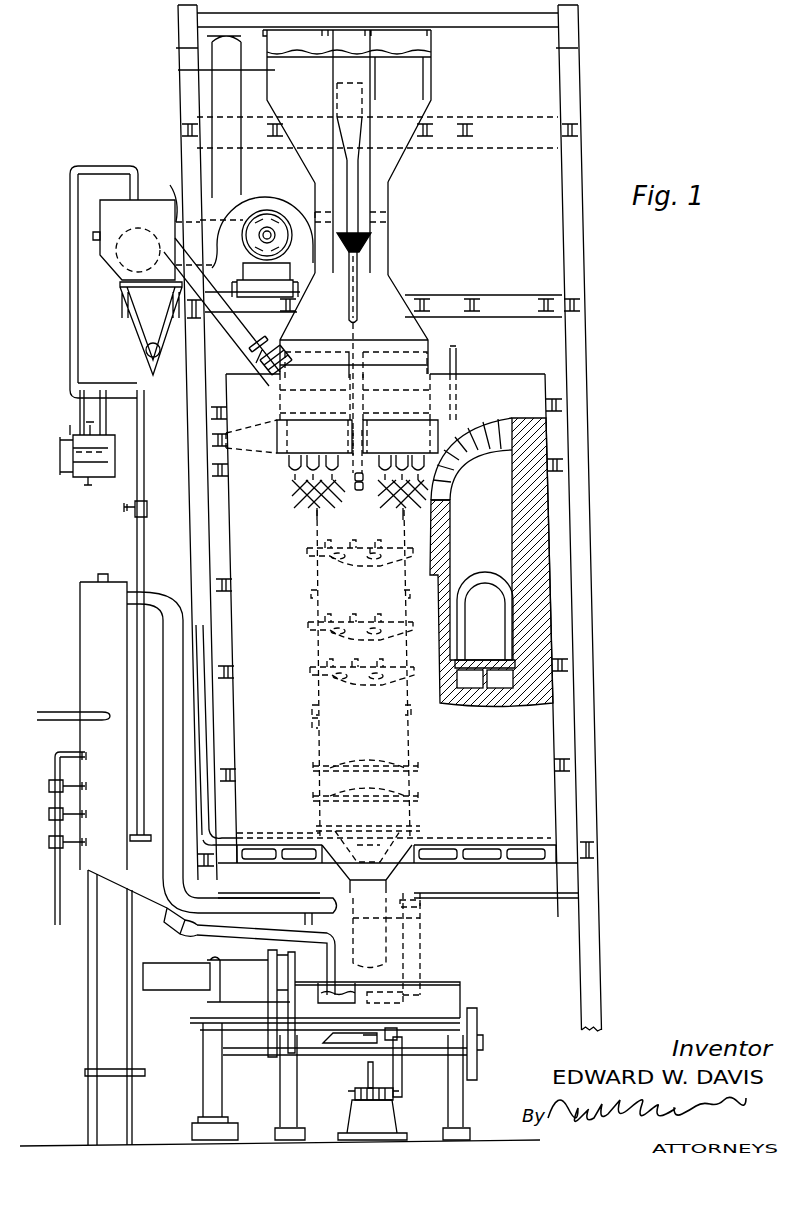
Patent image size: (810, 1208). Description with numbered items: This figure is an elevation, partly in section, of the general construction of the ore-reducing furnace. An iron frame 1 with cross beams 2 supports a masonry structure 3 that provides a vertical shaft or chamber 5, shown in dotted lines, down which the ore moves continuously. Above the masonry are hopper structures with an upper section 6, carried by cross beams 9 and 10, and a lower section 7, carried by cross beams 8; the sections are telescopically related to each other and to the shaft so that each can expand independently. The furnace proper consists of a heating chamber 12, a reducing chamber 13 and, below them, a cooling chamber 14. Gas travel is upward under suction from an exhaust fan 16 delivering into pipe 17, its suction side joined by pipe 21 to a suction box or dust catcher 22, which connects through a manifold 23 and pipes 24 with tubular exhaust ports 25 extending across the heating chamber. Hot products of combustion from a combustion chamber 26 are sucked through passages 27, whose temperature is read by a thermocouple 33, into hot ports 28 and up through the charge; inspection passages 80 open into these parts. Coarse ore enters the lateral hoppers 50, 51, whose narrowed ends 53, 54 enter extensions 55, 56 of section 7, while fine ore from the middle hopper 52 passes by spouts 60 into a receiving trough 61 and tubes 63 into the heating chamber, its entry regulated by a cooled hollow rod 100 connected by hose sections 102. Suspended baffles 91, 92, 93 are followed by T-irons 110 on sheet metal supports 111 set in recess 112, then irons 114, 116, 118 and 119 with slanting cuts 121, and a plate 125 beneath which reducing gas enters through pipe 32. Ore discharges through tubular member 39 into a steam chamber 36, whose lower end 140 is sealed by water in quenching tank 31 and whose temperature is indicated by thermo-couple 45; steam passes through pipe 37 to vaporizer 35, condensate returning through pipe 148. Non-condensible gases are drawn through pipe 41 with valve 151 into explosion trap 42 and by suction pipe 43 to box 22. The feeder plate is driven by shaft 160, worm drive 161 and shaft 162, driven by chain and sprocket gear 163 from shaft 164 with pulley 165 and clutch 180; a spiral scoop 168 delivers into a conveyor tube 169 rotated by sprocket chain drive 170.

The iron frame 1 is at (594, 541).
The cross beams 2 is at (540, 842).
The masonry structure 3 is at (531, 740).
The vertical shaft or chamber 5 is at (417, 747).
The upper hopper section 6 is at (442, 81).
The lower hopper section 7 is at (407, 278).
The cross beams 8 is at (422, 297).
The cross beams 9 is at (480, 120).
The cross beams 10 is at (503, 26).
The heating chamber 12 is at (281, 405).
The reducing chamber 13 is at (312, 708).
The cooling chamber 14 is at (410, 965).
The exhaust fan 16 is at (267, 198).
The pipe 17 is at (232, 100).
The pipe 21 is at (197, 228).
The suction box or dust catcher 22 is at (108, 215).
The manifold 23 is at (245, 334).
The pipes 24 is at (256, 352).
The tubular exhaust ports 25 is at (383, 352).
The combustion chamber 26 is at (500, 515).
The passages 27 is at (492, 440).
The hot ports 28 is at (400, 424).
The quenching tank 31 is at (462, 993).
The pipe 32 is at (232, 832).
The thermocouple 33 is at (458, 352).
The vaporizer 35 is at (88, 738).
The steam chamber 36 is at (410, 920).
The pipe 37 is at (262, 898).
The tubular member 39 is at (395, 937).
The pipe 41 is at (142, 556).
The explosion trap 42 is at (102, 468).
The suction pipe 43 is at (76, 304).
The thermo-couple 45 is at (420, 905).
The hopper 50 is at (212, 71).
The hopper 51 is at (424, 64).
The middle hopper 52 is at (362, 48).
The lower narrowed end of hopper 53 is at (317, 191).
The lower narrowed end of hopper 54 is at (380, 189).
The narrowed upward extension 55 is at (327, 239).
The narrowed upward extension 56 is at (384, 224).
The narrow spouts 60 is at (358, 201).
The receiving trough 61 is at (366, 241).
The tubes 63 is at (356, 272).
The inspection passages 80 is at (226, 441).
The baffle 91 is at (303, 492).
The baffle 92 is at (325, 498).
The baffle 93 is at (330, 492).
The hollow rod 100 is at (362, 478).
The hose sections 102 is at (396, 858).
The T-irons 110 is at (320, 546).
The sheet metal supports 111 is at (364, 560).
The recess 112 is at (318, 556).
The irons 114 is at (400, 615).
The irons 116 is at (332, 660).
The irons 118 is at (375, 760).
The irons 119 is at (354, 787).
The slanting cut 121 is at (320, 798).
The plate 125 is at (376, 826).
The lower end of steam chamber casing 140 is at (384, 994).
The pipe 148 is at (176, 922).
The valve 151 is at (148, 508).
The shaft 160 is at (368, 1076).
The worm drive 161 is at (366, 1091).
The shaft 162 is at (398, 1098).
The chain and sprocket gear 163 is at (403, 1078).
The shaft 164 is at (440, 1045).
The pulley 165 is at (478, 1072).
The spiral scoop 168 is at (305, 926).
The horizontal conveyor tube 169 is at (172, 982).
The sprocket chain drive 170 is at (272, 969).
The clutch 180 is at (400, 1030).